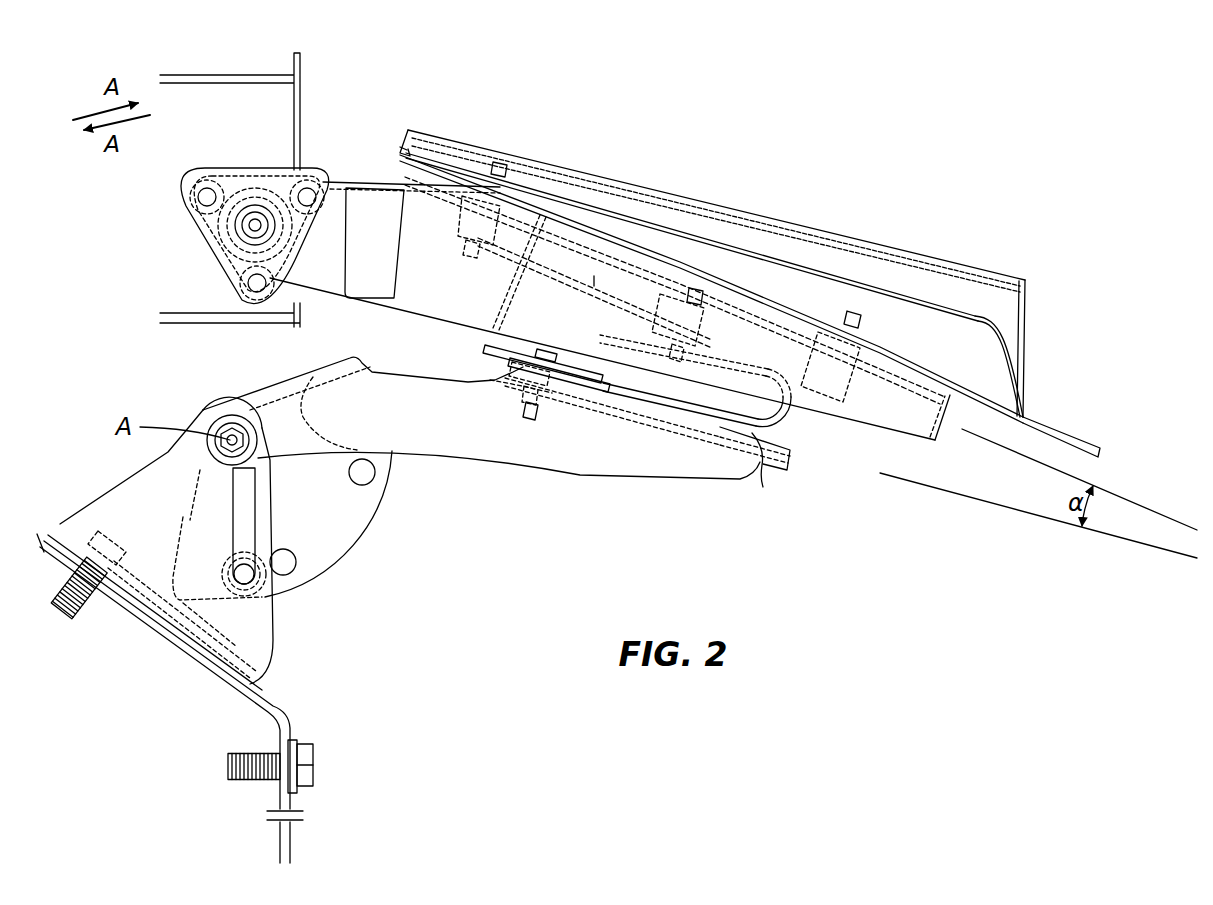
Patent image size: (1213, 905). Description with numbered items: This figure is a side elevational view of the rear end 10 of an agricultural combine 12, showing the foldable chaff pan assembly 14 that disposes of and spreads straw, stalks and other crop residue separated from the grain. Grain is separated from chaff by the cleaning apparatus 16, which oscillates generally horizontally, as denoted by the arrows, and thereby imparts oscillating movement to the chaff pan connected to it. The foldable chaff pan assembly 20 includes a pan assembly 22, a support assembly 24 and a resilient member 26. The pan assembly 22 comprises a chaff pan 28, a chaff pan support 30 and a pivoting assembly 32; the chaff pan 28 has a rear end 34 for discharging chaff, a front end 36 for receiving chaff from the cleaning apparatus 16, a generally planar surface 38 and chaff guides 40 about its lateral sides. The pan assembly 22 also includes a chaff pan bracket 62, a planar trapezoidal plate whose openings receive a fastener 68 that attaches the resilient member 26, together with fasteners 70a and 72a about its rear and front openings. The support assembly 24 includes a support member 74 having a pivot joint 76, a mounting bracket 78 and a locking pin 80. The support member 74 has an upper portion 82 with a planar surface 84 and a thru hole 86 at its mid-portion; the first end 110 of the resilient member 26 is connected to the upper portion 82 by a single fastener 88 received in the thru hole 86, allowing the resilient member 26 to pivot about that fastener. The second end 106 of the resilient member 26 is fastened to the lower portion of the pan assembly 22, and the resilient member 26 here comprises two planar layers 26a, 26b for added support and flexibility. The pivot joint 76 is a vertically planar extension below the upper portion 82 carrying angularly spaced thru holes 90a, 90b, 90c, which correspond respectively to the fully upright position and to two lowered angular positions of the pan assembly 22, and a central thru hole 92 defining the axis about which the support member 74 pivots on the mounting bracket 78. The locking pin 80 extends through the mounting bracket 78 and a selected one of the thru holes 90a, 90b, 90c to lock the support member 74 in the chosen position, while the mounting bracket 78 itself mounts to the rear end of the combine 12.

The rear end 10 is at (358, 80).
The agricultural combine 12 is at (305, 802).
The foldable chaff pan assembly 14 is at (940, 424).
The cleaning apparatus 16 is at (228, 70).
The foldable chaff pan assembly 20 is at (960, 207).
The pan assembly 22 is at (588, 168).
The support assembly 24 is at (410, 441).
The resilient member 26 is at (720, 390).
The planar layer 26a is at (680, 404).
The planar layer 26b is at (752, 420).
The chaff pan 28 is at (796, 312).
The chaff pan support 30 is at (322, 294).
The pivoting assembly 32 is at (243, 176).
The rear end 34 is at (1028, 330).
The front end 36 is at (402, 132).
The planar surface 38 is at (1062, 432).
The chaff guides 40 is at (1023, 278).
The chaff pan bracket 62 is at (594, 284).
The fastener 68 is at (702, 297).
The fastener 70a is at (858, 318).
The fastener 72a is at (500, 166).
The support member 74 is at (588, 480).
The pivot joint 76 is at (352, 516).
The mounting bracket 78 is at (268, 655).
The locking pin 80 is at (228, 530).
The upper portion 82 is at (782, 441).
The planar surface 84 is at (754, 444).
The thru hole 86 is at (550, 374).
The fastener 88 is at (531, 420).
The thru hole 90a is at (254, 582).
The thru hole 90b is at (295, 568).
The thru hole 90c is at (373, 478).
The central thru hole 92 is at (236, 428).
The second end 106 is at (655, 314).
The first end 110 is at (482, 349).